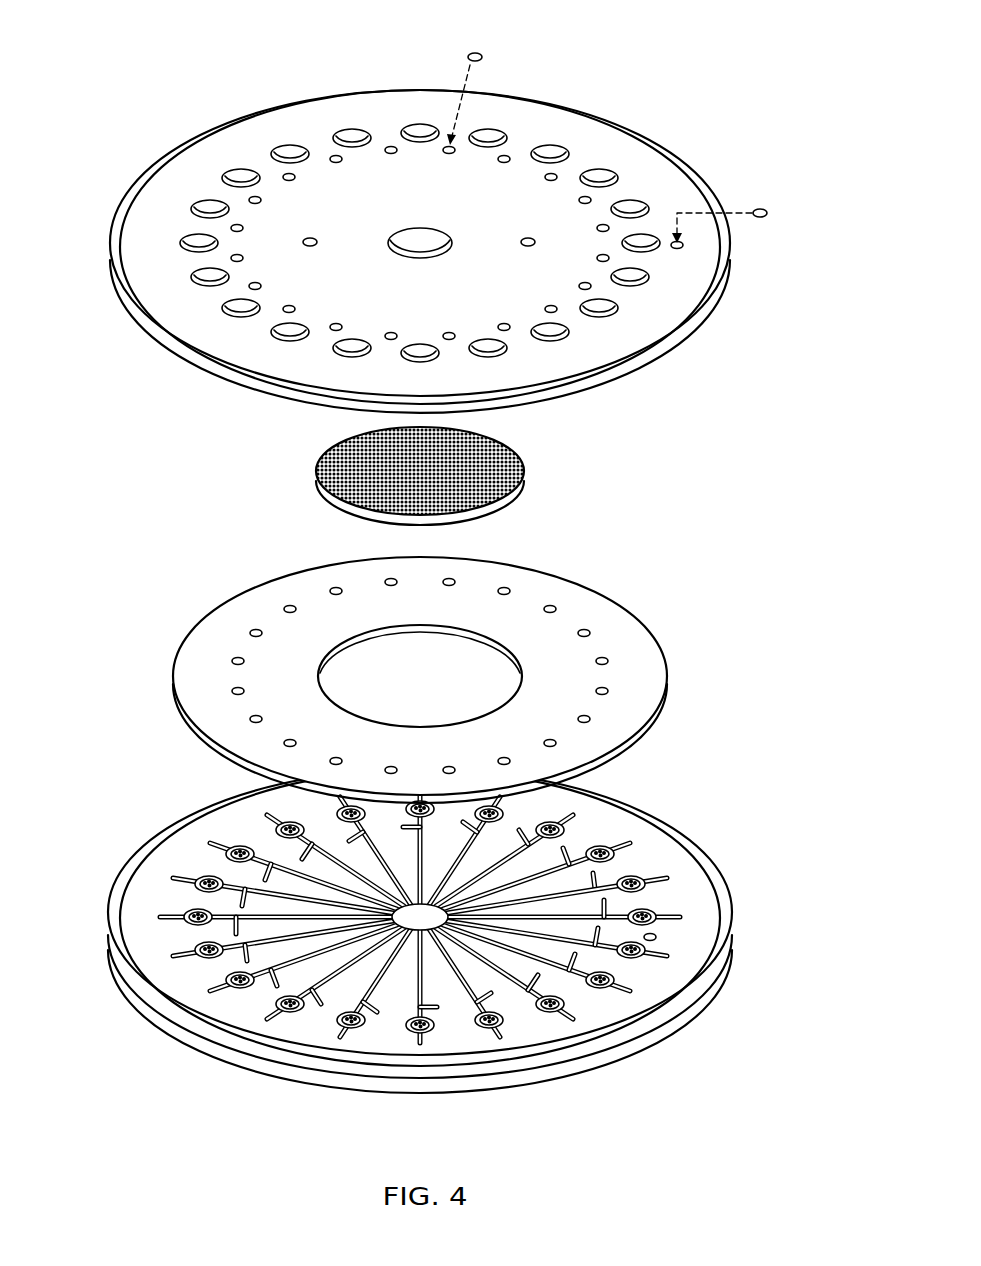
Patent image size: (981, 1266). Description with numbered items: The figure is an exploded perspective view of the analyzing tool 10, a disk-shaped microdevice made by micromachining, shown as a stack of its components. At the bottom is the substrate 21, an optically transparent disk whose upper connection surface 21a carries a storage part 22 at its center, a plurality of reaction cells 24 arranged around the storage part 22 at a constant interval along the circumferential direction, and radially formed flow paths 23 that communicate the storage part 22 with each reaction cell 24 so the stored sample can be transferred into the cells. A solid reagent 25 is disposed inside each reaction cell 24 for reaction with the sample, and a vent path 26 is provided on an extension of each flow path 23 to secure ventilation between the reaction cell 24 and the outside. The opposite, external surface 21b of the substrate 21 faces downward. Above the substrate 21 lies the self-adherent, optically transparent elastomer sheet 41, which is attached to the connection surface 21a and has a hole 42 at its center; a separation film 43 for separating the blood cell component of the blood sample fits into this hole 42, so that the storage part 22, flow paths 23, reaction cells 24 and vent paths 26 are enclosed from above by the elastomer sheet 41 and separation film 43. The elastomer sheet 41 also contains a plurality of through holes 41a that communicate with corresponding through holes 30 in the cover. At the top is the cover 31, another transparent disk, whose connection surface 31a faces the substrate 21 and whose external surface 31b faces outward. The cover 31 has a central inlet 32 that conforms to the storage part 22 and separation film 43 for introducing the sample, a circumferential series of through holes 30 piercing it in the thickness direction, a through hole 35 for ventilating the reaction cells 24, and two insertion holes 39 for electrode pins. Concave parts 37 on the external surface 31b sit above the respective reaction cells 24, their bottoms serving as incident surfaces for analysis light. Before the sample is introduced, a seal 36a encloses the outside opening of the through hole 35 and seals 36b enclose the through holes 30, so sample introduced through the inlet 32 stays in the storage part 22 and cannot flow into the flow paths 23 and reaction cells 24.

The analyzing tool 10 is at (70, 102).
The substrate 21 is at (452, 962).
The connection surface 21a is at (652, 982).
The external surface 21b is at (628, 1058).
The storage part 22 is at (414, 932).
The flow path 23 is at (578, 890).
The reaction cell 24 is at (641, 874).
The reagent 25 is at (675, 833).
The vent path 26 is at (650, 880).
The through hole 30 is at (557, 312).
The cover 31 is at (432, 212).
The connection surface 31a is at (192, 362).
The external surface 31b is at (148, 260).
The inlet 32 is at (420, 230).
The through hole 35 is at (681, 249).
The seal 36a is at (762, 209).
The seal 36b is at (481, 51).
The concave part 37 is at (237, 173).
The insertion hole 39 is at (310, 234).
The elastomer sheet 41 is at (620, 630).
The through hole 41a is at (606, 689).
The hole 42 is at (508, 660).
The separation film 43 is at (527, 477).